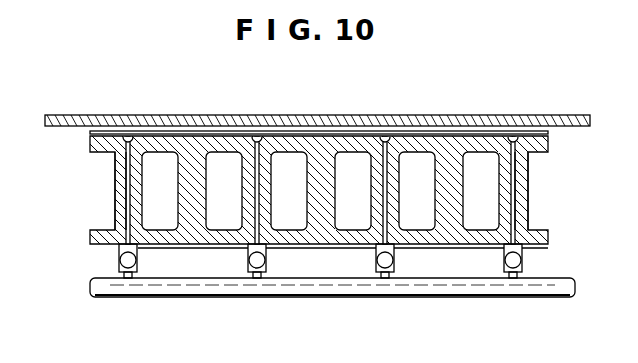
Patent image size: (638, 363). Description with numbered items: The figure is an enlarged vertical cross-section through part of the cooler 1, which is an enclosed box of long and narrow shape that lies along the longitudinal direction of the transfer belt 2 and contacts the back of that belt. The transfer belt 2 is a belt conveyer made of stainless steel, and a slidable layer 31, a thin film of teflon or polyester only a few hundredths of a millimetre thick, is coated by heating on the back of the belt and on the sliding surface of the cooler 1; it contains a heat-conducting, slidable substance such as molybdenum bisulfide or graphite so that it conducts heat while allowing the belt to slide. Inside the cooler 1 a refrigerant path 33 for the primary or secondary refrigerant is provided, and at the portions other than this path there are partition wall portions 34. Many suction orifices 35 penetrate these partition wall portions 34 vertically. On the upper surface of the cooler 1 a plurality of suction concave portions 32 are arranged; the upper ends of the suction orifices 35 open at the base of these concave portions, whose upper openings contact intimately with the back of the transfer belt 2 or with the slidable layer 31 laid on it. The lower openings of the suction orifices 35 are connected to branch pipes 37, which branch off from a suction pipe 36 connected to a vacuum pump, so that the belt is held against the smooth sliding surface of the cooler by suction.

The cooler 1 is at (321, 244).
The transfer belt 2 is at (441, 114).
The slidable layer 31 is at (193, 131).
The suction concave portions 32 is at (128, 137).
The refrigerant path 33 is at (224, 222).
The partition wall portions 34 is at (527, 184).
The suction orifices 35 is at (116, 191).
The suction pipe 36 is at (427, 298).
The branch pipes 37 is at (131, 268).